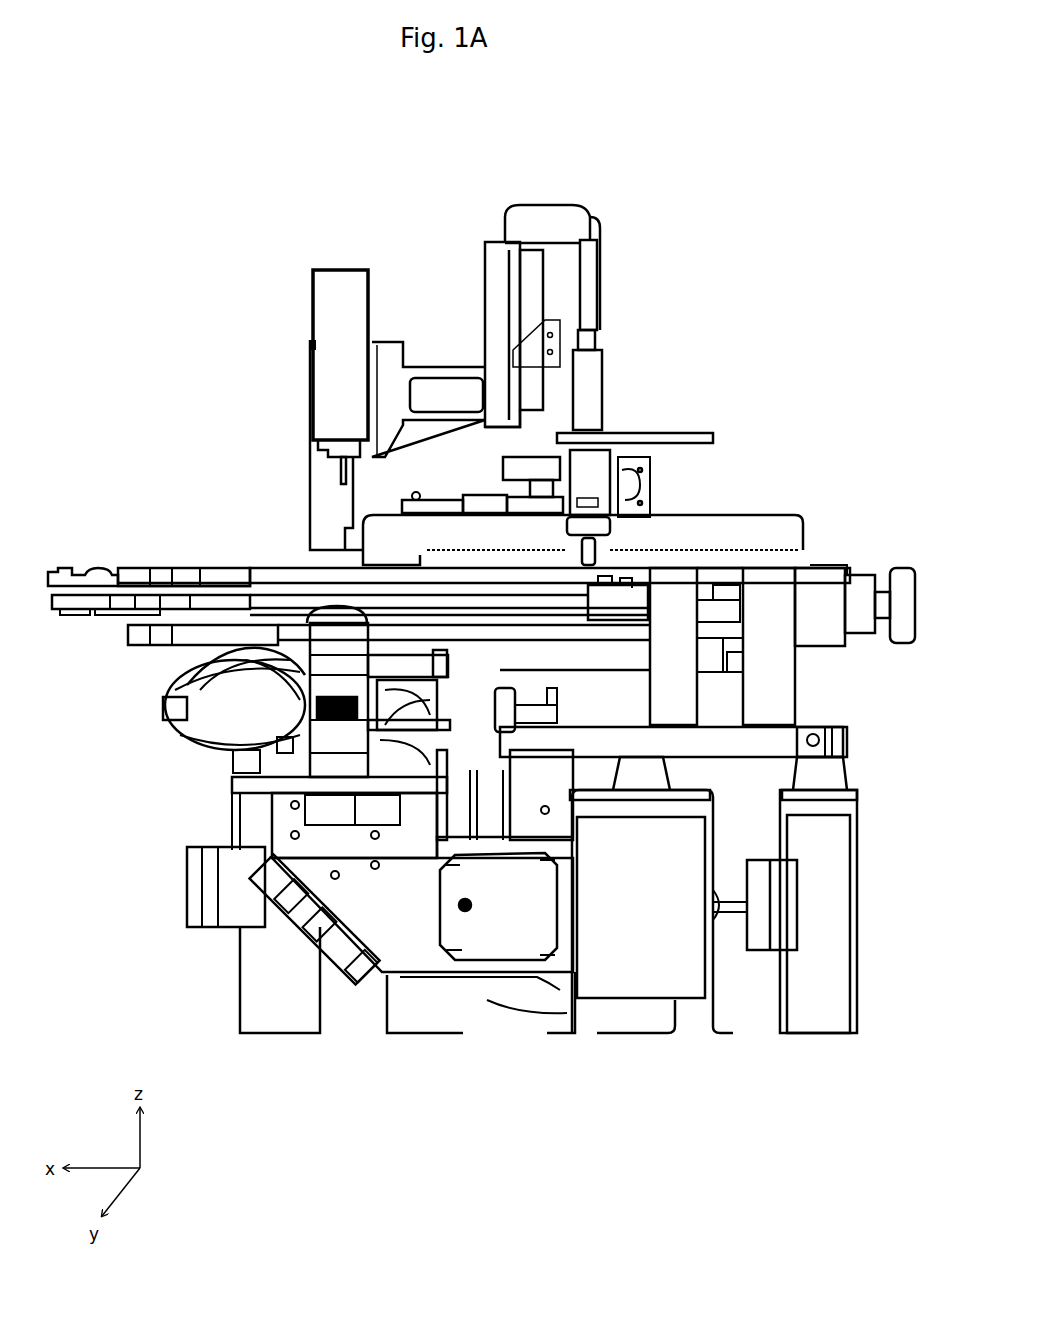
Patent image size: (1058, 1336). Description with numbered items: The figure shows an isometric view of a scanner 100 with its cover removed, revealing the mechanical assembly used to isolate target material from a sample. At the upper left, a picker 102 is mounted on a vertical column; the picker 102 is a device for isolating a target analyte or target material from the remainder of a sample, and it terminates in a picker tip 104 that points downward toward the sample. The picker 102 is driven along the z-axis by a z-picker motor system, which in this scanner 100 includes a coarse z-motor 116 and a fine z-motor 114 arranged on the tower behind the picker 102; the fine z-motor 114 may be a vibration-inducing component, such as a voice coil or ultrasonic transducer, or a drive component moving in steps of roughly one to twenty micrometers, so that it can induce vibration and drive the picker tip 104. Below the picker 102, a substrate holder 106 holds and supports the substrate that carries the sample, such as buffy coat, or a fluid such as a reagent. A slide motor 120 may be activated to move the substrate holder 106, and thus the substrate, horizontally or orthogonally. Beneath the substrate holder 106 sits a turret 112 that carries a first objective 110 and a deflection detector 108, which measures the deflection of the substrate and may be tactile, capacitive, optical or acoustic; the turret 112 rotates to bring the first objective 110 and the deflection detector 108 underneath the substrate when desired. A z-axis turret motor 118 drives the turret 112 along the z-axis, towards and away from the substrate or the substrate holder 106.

The scanner 100 is at (265, 226).
The picker 102 is at (310, 386).
The picker tip 104 is at (333, 474).
The substrate holder 106 is at (95, 563).
The deflection detector 108 is at (238, 654).
The first objective 110 is at (393, 681).
The turret 112 is at (286, 754).
The fine z-motor 114 is at (444, 352).
The coarse z-motor 116 is at (612, 354).
The z-axis turret motor 118 is at (228, 842).
The slide motor 120 is at (596, 598).